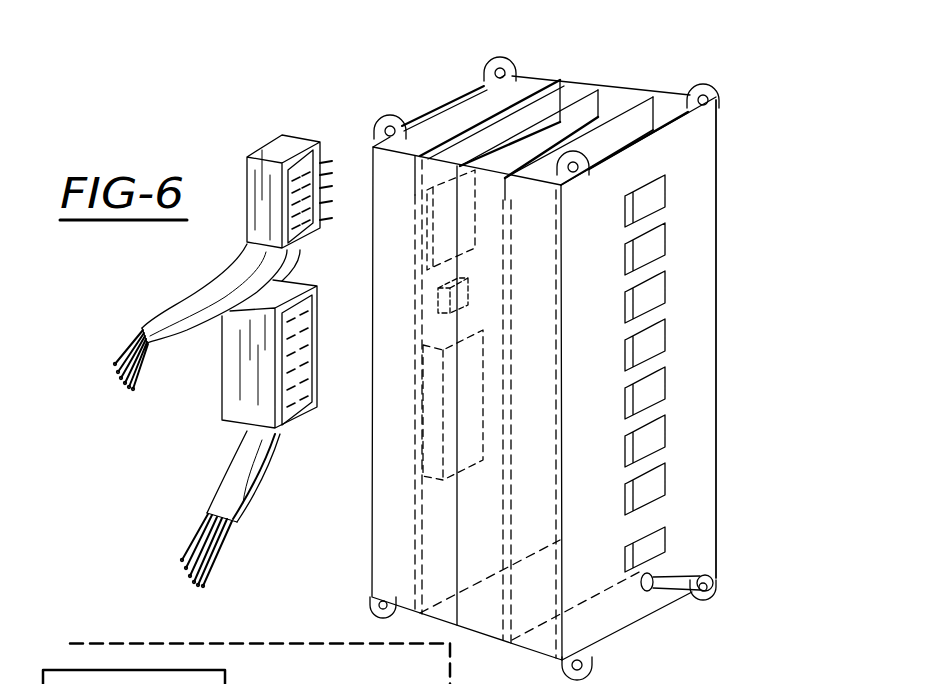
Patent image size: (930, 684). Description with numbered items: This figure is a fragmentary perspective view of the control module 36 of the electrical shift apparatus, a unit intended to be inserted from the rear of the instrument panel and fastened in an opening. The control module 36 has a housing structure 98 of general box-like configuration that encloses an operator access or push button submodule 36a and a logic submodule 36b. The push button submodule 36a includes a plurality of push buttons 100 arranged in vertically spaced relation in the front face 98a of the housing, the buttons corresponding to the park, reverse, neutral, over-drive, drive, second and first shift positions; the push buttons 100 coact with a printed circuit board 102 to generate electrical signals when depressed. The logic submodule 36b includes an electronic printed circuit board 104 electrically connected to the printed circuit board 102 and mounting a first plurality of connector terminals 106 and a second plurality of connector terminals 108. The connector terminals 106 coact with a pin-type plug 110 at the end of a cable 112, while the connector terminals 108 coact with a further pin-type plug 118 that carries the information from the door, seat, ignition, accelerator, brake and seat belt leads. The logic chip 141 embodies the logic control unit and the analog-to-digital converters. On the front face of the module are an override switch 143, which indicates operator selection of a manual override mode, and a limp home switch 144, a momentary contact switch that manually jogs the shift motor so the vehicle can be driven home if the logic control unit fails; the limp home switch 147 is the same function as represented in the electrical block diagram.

The control module 36 is at (727, 142).
The push button submodule 36a is at (659, 124).
The logic submodule 36b is at (565, 92).
The housing structure 98 is at (393, 551).
The front face 98a is at (693, 369).
The push buttons 100 is at (666, 191).
The printed circuit board 102 is at (635, 90).
The electronic printed circuit board 104 is at (531, 81).
The first plurality of connector terminals 106 is at (432, 440).
The second plurality of connector terminals 108 is at (430, 237).
The pin-type plug 110 is at (232, 400).
The cable 112 is at (232, 482).
The pin-type plug 118 is at (288, 148).
The logic chip 141 is at (436, 302).
The override switch 143 is at (667, 543).
The limp home switch 144 is at (700, 597).
The limp home switch 147 is at (382, 664).